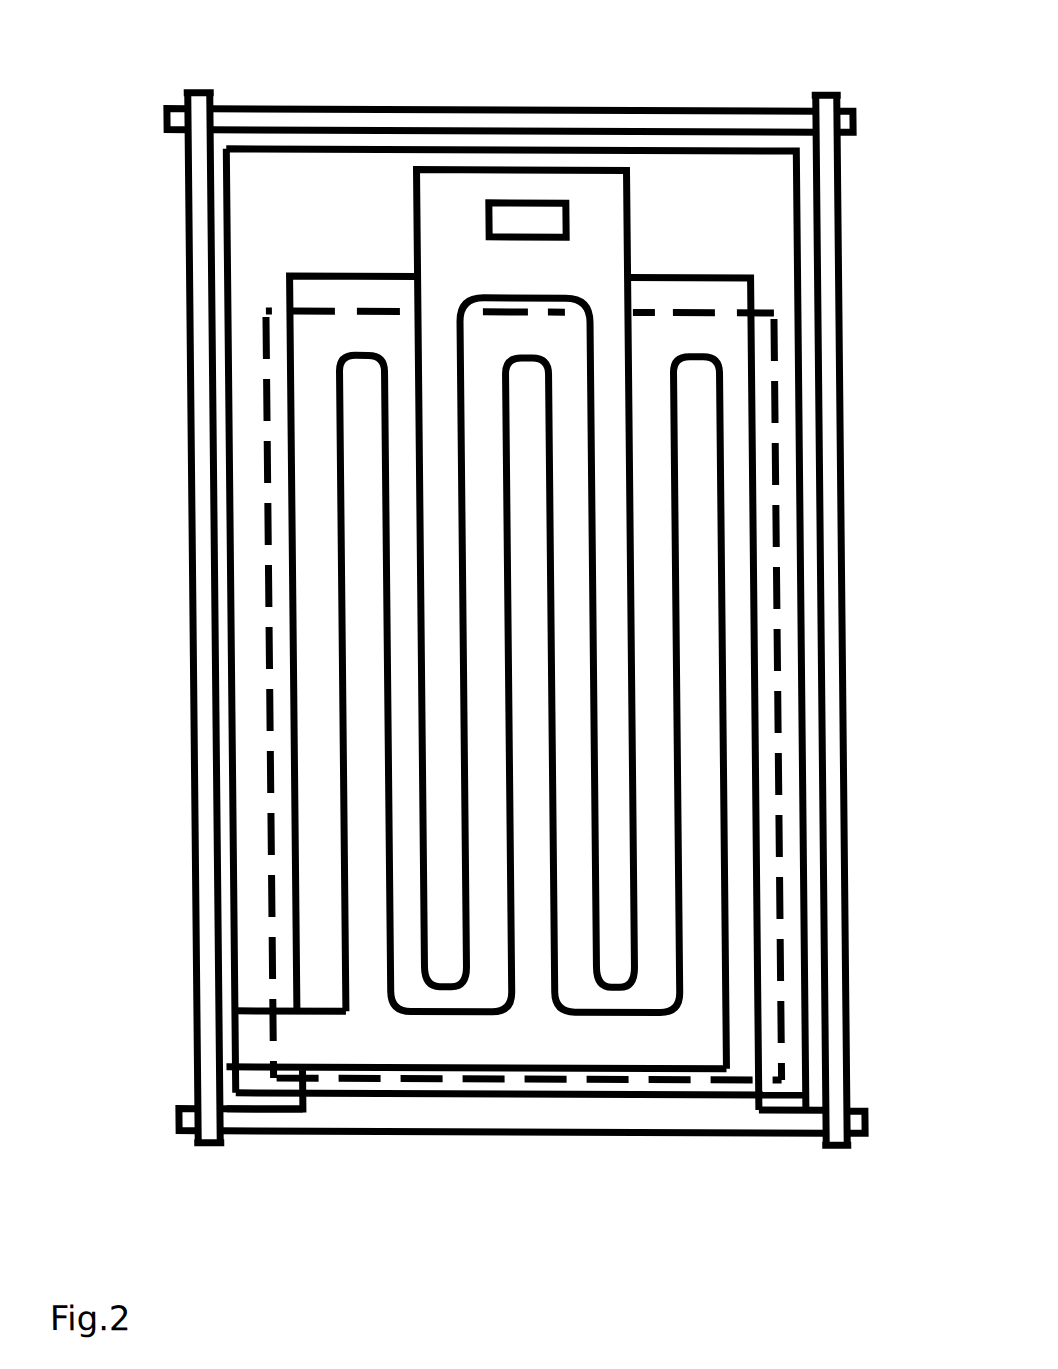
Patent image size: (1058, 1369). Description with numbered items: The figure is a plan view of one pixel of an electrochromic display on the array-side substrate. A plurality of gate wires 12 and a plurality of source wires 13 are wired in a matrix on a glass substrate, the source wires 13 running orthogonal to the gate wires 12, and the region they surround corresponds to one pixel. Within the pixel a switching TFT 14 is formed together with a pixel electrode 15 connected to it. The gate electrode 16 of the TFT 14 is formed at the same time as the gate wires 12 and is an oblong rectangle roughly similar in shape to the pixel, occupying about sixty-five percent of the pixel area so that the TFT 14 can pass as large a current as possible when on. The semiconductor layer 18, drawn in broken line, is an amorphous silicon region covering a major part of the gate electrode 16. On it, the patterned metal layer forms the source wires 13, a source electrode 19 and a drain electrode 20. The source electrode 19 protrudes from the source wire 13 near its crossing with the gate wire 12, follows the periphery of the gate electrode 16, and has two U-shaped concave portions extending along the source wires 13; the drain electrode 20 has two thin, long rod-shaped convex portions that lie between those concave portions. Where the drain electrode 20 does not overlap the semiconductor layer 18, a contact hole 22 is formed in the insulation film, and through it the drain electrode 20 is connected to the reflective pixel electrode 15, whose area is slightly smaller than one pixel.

The gate wire 12 is at (283, 129).
The source wire 13 is at (201, 184).
The switching TFT 14 is at (716, 191).
The pixel electrode 15 is at (783, 267).
The gate electrode 16 is at (453, 1103).
The semiconductor layer 18 is at (779, 519).
The source electrode 19 is at (258, 1043).
The drain electrode 20 is at (447, 203).
The contact hole 22 is at (533, 227).